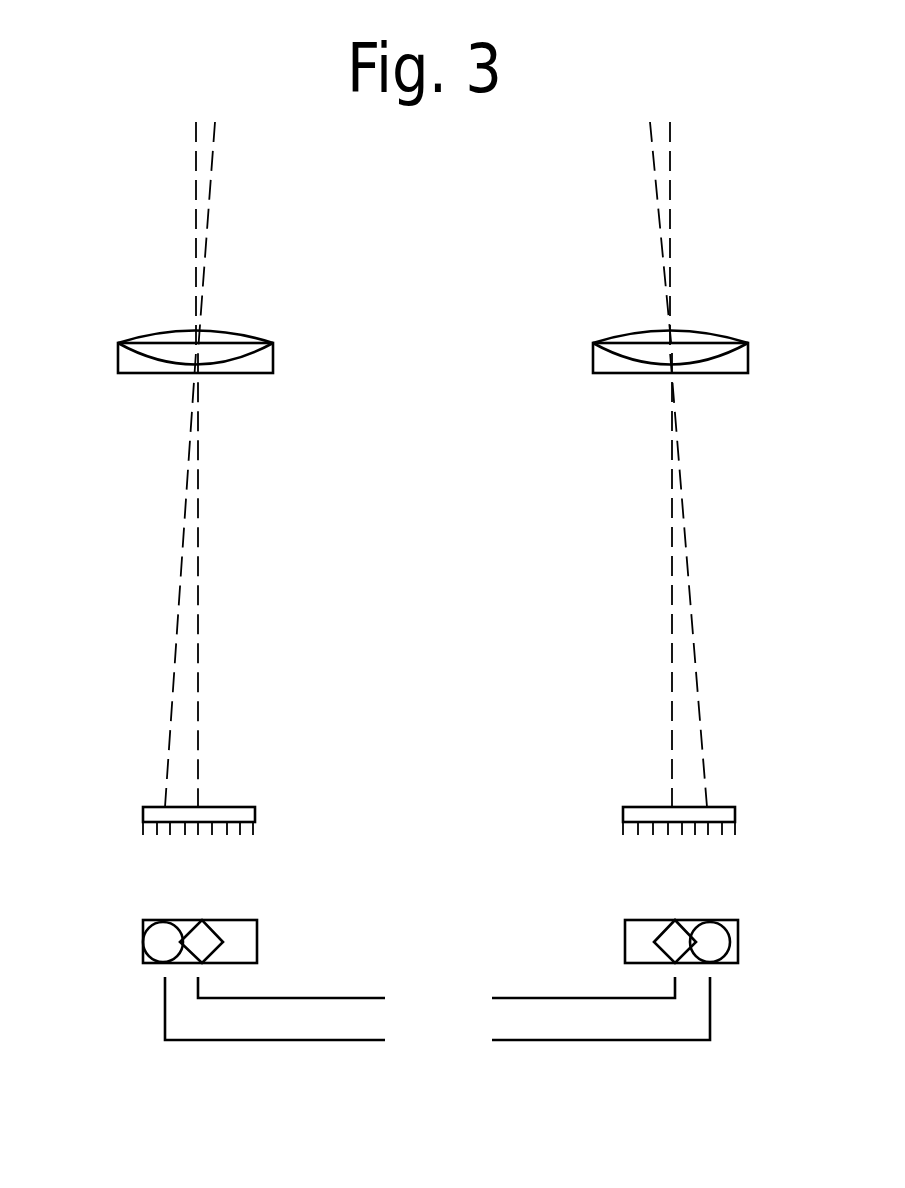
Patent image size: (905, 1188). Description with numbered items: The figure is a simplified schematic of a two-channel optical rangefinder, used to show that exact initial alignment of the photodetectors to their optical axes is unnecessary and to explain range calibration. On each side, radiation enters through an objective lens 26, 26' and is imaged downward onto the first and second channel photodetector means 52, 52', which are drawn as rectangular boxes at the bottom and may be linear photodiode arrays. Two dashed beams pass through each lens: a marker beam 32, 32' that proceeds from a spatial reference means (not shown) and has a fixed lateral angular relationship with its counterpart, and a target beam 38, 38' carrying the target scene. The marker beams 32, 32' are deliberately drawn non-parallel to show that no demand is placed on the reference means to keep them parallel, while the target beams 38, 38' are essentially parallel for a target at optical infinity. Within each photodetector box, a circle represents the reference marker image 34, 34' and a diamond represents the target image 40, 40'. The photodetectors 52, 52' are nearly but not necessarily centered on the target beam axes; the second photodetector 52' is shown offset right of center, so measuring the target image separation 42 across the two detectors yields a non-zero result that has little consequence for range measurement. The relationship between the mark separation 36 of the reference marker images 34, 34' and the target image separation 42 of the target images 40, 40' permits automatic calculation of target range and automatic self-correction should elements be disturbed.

The first channel objective lens 26 is at (141, 329).
The second channel objective lens 26' is at (724, 329).
The first channel marker beam 32 is at (139, 464).
The second channel marker beam 32' is at (741, 464).
The first channel target beam 38 is at (253, 464).
The second channel target beam 38' is at (618, 464).
The first channel reference marker image 34 is at (175, 886).
The second channel reference marker image 34' is at (699, 885).
The first channel target image 40 is at (228, 886).
The second channel target image 40' is at (647, 886).
The first channel photodetector means 52 is at (171, 885).
The second channel photodetector means 52' is at (712, 885).
The target image separation 42 is at (436, 997).
The mark separation 36 is at (437, 1021).